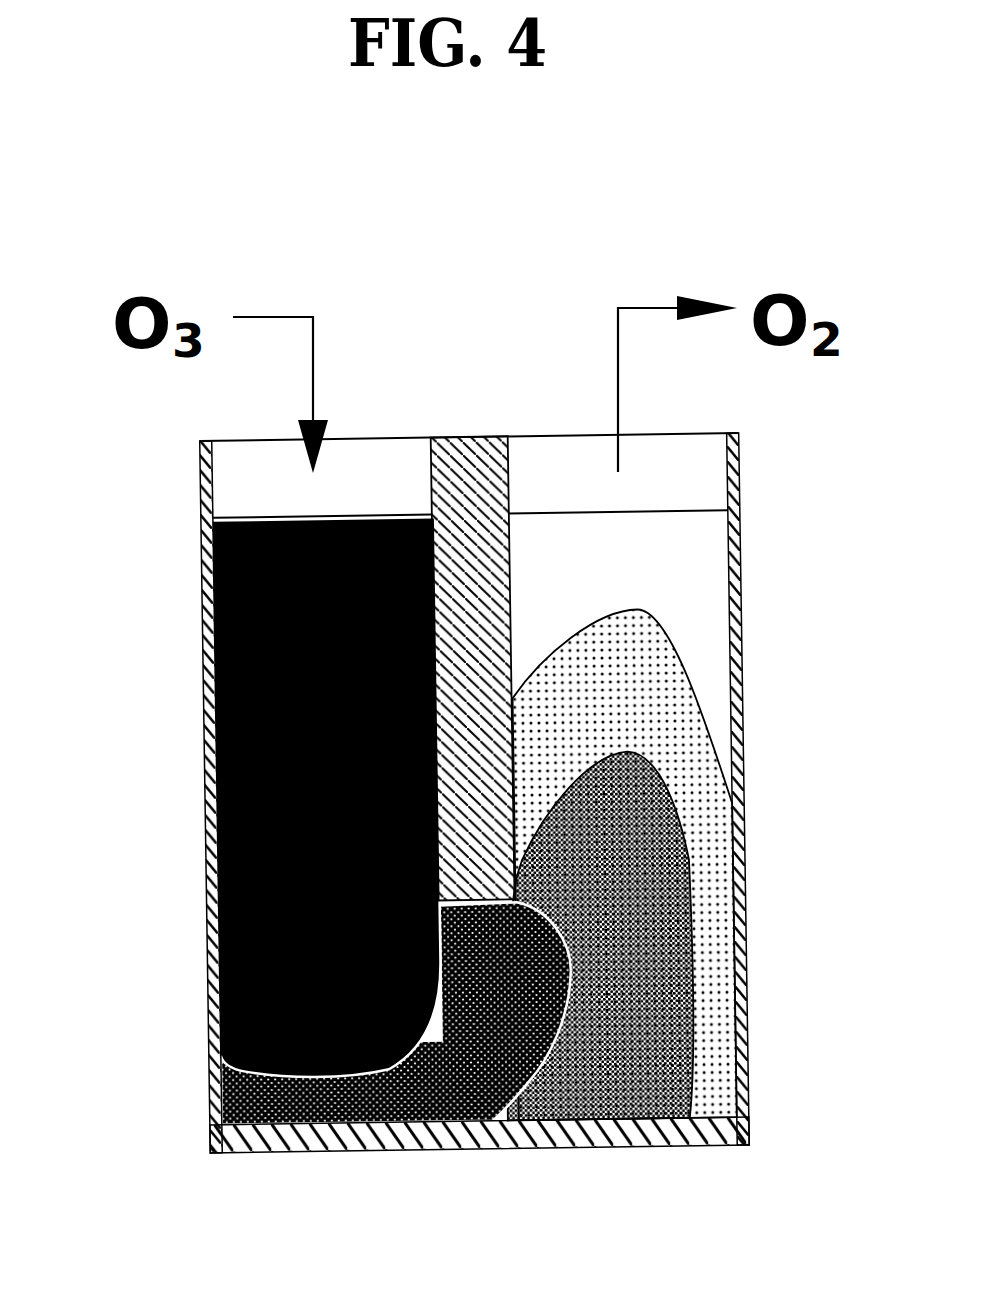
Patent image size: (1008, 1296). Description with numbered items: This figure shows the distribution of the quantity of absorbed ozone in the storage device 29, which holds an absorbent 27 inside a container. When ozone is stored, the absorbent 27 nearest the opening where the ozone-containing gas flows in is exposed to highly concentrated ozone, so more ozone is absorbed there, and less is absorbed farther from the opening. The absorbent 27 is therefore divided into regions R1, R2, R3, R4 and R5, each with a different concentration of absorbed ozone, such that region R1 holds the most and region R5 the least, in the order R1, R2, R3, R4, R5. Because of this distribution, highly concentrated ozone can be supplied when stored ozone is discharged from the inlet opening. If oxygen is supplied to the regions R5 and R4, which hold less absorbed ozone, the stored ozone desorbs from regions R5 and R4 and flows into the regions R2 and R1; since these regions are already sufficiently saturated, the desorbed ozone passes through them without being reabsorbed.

The absorbent 27 is at (687, 558).
The storage device 29 is at (207, 965).
The region R1 is at (325, 642).
The region R2 is at (330, 919).
The region R3 is at (451, 1122).
The region R4 is at (618, 1093).
The region R5 is at (693, 727).